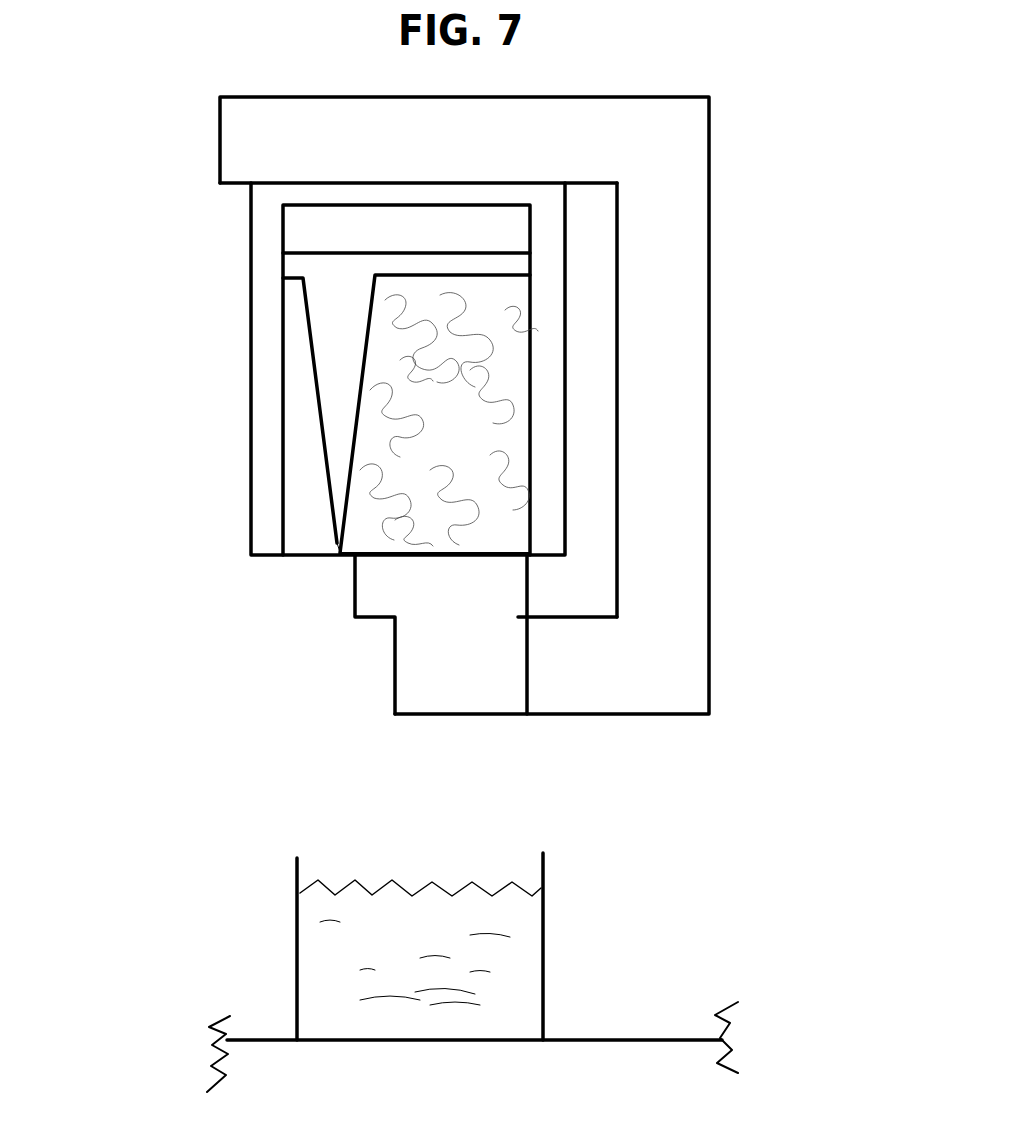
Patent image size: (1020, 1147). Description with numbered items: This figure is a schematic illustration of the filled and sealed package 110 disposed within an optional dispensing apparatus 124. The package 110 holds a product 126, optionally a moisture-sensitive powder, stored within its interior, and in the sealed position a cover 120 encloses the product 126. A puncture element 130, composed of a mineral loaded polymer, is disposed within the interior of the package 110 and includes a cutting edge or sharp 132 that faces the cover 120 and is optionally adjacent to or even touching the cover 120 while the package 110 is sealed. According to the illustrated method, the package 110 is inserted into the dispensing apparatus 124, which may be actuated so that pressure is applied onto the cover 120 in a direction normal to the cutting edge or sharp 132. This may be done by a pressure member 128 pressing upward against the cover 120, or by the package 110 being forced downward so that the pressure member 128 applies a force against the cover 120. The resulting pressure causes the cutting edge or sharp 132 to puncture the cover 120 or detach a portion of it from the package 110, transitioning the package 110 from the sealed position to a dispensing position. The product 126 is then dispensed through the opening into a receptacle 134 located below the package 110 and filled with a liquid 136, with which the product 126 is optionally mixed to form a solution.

The package 110 is at (214, 248).
The cover 120 is at (290, 557).
The dispensing apparatus 124 is at (670, 375).
The product 126 is at (477, 449).
The pressure member 128 is at (377, 598).
The puncture element 130 is at (337, 367).
The cutting edge or sharp 132 is at (312, 530).
The receptacle 134 is at (252, 875).
The liquid 136 is at (480, 925).